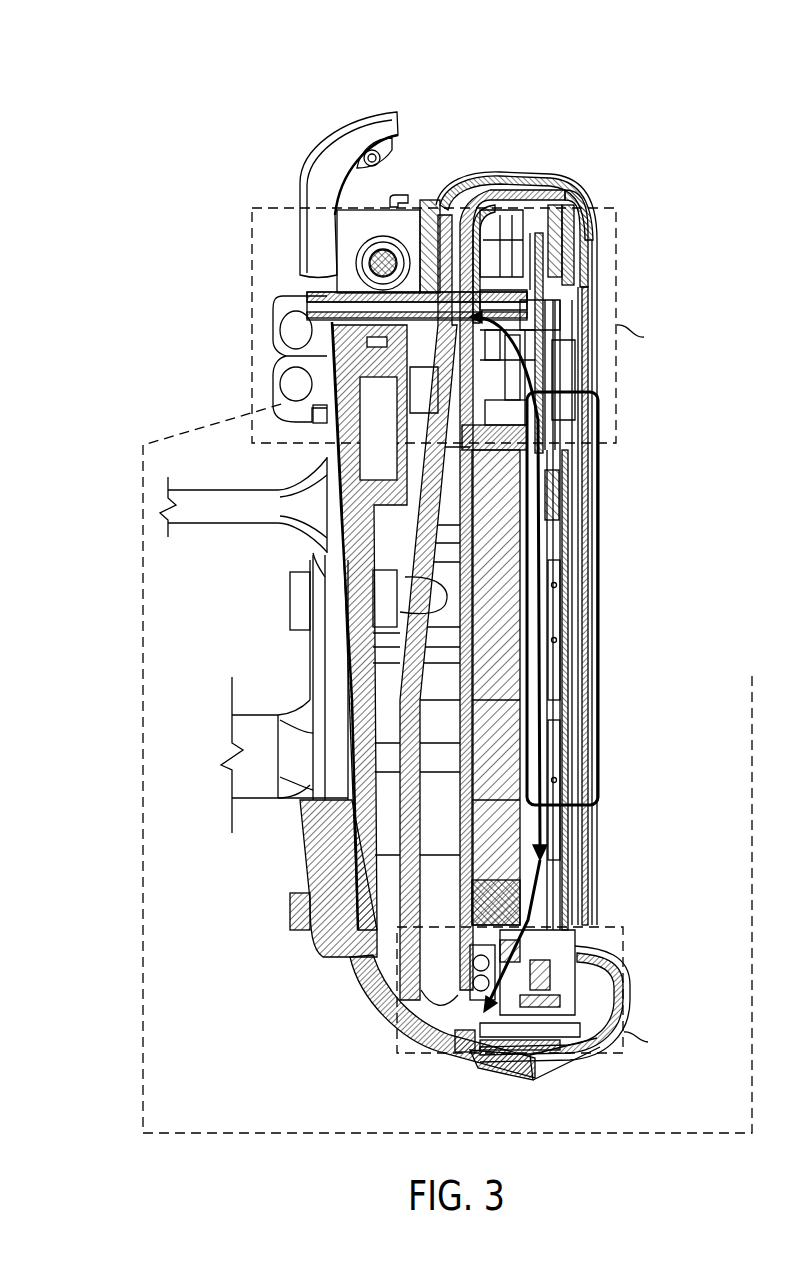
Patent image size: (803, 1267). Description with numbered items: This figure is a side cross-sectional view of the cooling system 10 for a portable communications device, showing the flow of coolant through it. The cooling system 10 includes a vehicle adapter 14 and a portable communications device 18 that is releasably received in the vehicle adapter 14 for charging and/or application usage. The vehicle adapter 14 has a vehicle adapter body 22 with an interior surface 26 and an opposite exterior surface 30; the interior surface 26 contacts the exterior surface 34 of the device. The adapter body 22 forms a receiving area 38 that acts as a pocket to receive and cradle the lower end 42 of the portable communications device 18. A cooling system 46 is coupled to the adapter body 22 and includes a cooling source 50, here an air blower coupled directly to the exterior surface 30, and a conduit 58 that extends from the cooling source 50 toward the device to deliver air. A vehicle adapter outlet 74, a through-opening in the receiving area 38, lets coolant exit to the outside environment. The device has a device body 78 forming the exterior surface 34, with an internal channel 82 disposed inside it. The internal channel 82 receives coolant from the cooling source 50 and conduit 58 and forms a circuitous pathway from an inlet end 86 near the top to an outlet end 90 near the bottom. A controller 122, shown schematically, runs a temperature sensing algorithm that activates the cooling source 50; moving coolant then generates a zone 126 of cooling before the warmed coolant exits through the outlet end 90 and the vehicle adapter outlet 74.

The cooling system 10 is at (90, 48).
The vehicle adapter 14 is at (286, 648).
The portable communications device 18 is at (610, 301).
The vehicle adapter body 22 is at (348, 481).
The interior surface 26 is at (420, 583).
The exterior surface 30 is at (375, 1002).
The exterior surface 34 is at (437, 205).
The receiving area 38 is at (614, 952).
The lower end 42 is at (586, 868).
The cooling system 46 is at (233, 358).
The cooling source 50 is at (290, 402).
The conduit 58 is at (290, 337).
The vehicle adapter outlet 74 is at (460, 1050).
The device body 78 is at (587, 196).
The internal channel 82 is at (552, 508).
The inlet end 86 is at (587, 247).
The outlet end 90 is at (494, 1042).
The controller 122 is at (752, 676).
The zone of cooling 126 is at (600, 580).